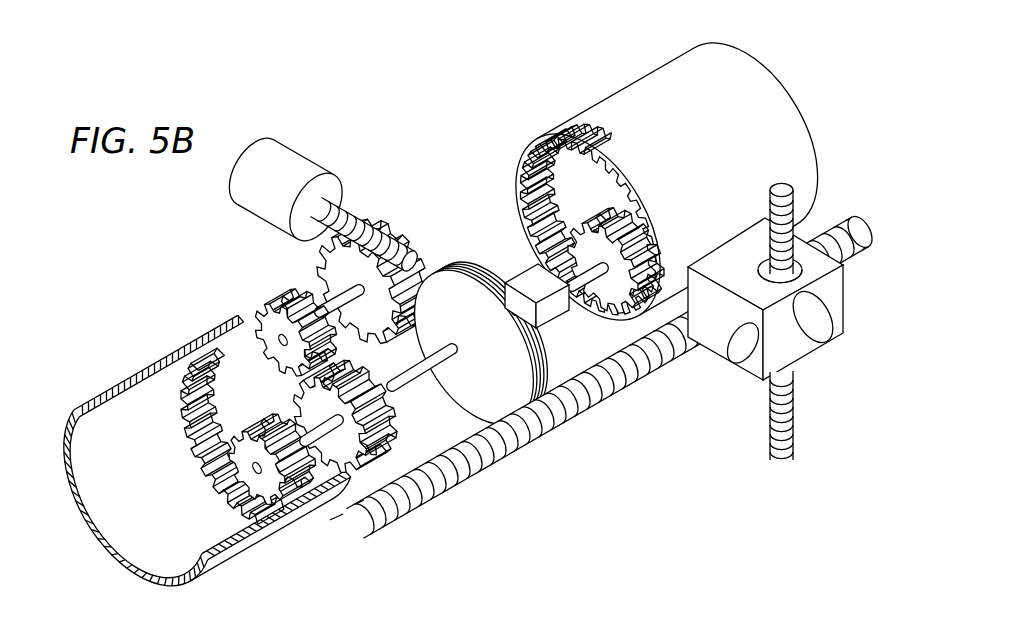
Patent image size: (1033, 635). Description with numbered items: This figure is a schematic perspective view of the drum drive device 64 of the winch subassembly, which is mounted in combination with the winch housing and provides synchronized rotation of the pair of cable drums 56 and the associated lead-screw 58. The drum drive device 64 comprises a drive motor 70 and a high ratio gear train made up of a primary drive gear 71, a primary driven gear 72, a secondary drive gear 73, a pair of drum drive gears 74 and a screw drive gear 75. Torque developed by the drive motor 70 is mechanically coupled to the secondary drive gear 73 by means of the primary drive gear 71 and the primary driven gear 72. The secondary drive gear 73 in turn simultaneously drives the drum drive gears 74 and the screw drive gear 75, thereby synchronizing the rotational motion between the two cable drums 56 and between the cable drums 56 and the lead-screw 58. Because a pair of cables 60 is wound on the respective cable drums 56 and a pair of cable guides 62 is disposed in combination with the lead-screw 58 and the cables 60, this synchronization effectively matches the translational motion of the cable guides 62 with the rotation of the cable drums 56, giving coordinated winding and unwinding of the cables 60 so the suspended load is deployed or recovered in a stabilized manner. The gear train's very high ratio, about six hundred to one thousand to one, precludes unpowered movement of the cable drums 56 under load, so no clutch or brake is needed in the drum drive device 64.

The cable drums 56 is at (182, 519).
The lead-screw 58 is at (503, 445).
The cables 60 is at (795, 224).
The cable guides 62 is at (838, 298).
The drum drive device 64 is at (350, 100).
The drive motor 70 is at (292, 172).
The primary drive gear 71 is at (344, 272).
The primary driven gear 72 is at (256, 314).
The secondary drive gear 73 is at (425, 465).
The drum drive gears 74 is at (240, 452).
The screw drive gear 75 is at (452, 262).